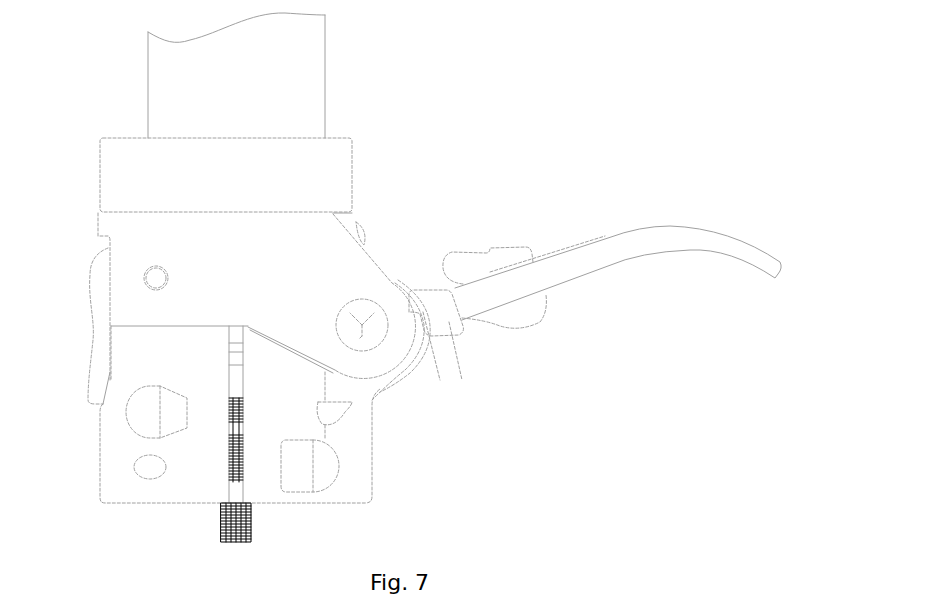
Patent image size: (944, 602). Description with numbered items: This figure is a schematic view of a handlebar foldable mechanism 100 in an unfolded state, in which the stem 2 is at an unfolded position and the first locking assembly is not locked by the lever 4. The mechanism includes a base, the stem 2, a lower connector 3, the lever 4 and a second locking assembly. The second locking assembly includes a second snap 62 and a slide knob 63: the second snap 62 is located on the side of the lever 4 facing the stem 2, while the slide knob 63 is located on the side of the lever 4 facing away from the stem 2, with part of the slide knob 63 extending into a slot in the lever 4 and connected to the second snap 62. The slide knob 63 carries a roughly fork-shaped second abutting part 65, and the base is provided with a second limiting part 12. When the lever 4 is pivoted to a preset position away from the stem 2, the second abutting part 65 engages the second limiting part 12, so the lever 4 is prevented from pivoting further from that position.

The handlebar foldable mechanism 100 is at (540, 33).
The stem 2 is at (148, 32).
The lower connector 3 is at (100, 190).
The lever 4 is at (700, 250).
The second limiting part 12 is at (432, 345).
The second snap 62 is at (487, 250).
The slide knob 63 is at (512, 333).
The second abutting part 65 is at (450, 340).